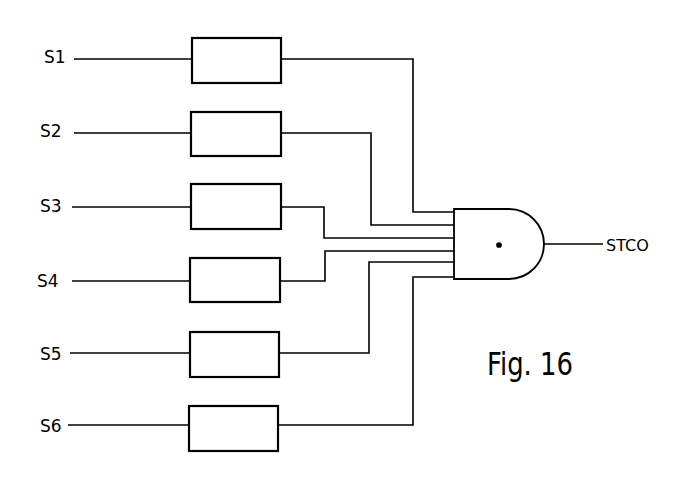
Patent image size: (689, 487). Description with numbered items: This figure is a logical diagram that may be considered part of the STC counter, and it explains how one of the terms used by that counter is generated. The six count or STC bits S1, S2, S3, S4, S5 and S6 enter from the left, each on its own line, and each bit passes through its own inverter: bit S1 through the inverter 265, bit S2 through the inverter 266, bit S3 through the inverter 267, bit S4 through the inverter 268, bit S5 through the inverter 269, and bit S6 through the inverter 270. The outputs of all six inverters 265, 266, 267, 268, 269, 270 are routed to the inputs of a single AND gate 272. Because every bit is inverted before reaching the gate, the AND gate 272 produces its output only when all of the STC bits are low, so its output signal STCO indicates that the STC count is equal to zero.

The inverter 265 is at (263, 38).
The inverter 266 is at (263, 112).
The inverter 267 is at (263, 184).
The inverter 268 is at (262, 258).
The inverter 269 is at (262, 332).
The inverter 270 is at (261, 406).
The AND gate 272 is at (492, 209).